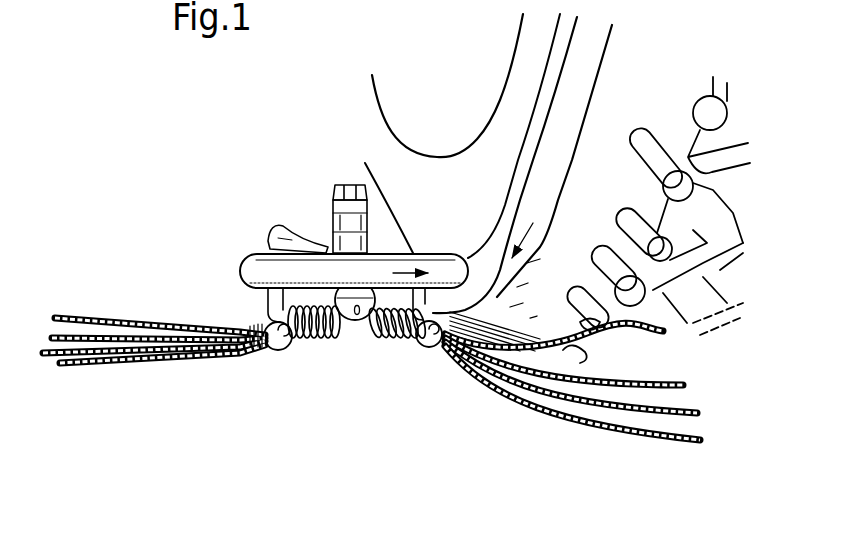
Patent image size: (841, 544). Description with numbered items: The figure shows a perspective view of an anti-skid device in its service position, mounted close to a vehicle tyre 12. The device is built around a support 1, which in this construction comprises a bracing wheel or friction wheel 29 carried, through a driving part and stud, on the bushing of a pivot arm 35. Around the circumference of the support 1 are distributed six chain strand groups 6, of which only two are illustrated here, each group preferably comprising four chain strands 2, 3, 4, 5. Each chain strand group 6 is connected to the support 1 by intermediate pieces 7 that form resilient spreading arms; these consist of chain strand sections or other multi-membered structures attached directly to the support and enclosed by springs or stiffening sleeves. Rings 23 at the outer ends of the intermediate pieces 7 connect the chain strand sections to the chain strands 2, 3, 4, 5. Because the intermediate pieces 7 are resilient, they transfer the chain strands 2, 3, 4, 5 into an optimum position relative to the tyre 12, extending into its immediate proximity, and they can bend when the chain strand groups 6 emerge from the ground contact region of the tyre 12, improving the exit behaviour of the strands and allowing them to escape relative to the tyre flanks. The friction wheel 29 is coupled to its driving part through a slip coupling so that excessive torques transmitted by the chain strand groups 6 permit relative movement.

The support 1 is at (353, 332).
The chain strand 2 is at (624, 340).
The chain strand 3 is at (660, 391).
The chain strand 4 is at (667, 419).
The chain strand 5 is at (662, 446).
The chain strand group 6 is at (186, 370).
The intermediate piece 7 is at (318, 344).
The tyre 12 is at (560, 146).
The ring 23 is at (277, 352).
The bracing wheel or friction wheel 29 is at (240, 272).
The pivot arm 35 is at (266, 236).